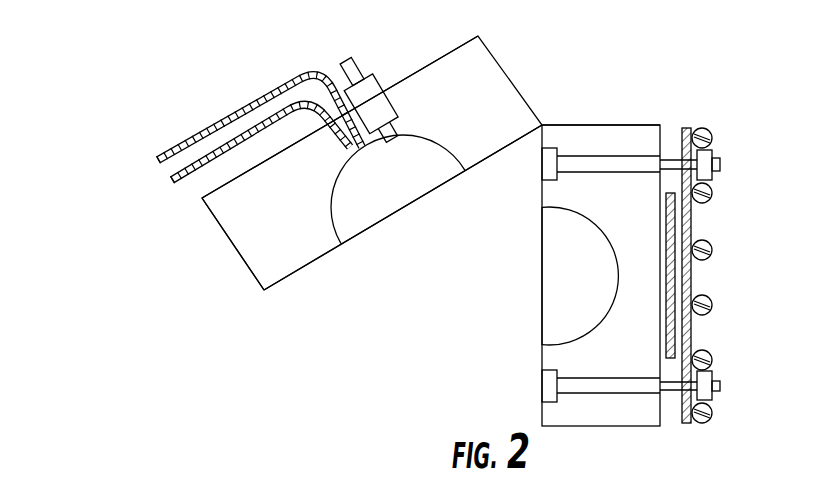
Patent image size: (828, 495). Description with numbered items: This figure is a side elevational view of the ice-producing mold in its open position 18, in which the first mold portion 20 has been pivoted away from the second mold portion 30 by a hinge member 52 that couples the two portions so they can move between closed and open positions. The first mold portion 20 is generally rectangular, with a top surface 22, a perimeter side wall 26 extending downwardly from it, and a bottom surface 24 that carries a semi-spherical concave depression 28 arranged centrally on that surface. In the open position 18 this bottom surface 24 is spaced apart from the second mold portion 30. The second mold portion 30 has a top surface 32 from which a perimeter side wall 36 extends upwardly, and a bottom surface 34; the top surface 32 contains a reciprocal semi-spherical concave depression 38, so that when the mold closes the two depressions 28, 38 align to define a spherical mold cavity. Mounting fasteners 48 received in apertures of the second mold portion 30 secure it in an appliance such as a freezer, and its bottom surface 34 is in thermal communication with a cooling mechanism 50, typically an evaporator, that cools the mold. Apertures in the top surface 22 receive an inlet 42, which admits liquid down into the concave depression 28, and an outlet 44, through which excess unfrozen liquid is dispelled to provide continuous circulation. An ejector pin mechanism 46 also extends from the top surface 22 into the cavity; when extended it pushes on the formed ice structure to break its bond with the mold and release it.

The open position 18 is at (144, 109).
The first mold portion 20 is at (502, 88).
The top surface 22 is at (431, 64).
The bottom surface 24 is at (493, 155).
The perimeter side wall 26 is at (231, 242).
The concave depression 28 is at (335, 228).
The second mold portion 30 is at (626, 422).
The top surface 32 is at (541, 355).
The bottom surface 34 is at (656, 125).
The perimeter side wall 36 is at (622, 125).
The concave depression 38 is at (570, 337).
The inlet 42 is at (171, 181).
The outlet 44 is at (157, 162).
The ejector pin mechanism 46 is at (349, 62).
The mounting fasteners 48 is at (709, 154).
The cooling mechanism 50 is at (671, 347).
The hinge member 52 is at (543, 125).